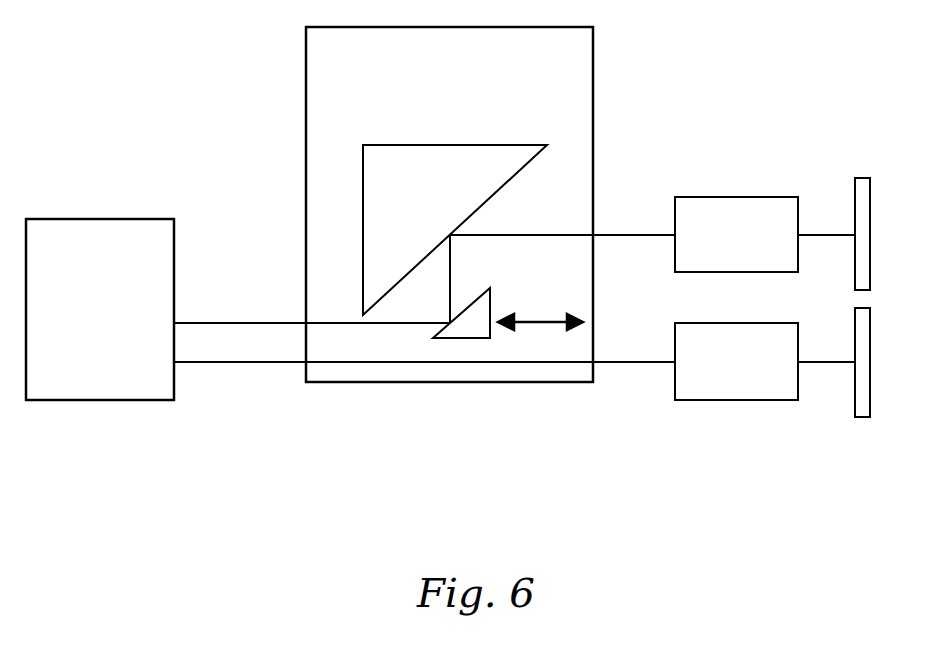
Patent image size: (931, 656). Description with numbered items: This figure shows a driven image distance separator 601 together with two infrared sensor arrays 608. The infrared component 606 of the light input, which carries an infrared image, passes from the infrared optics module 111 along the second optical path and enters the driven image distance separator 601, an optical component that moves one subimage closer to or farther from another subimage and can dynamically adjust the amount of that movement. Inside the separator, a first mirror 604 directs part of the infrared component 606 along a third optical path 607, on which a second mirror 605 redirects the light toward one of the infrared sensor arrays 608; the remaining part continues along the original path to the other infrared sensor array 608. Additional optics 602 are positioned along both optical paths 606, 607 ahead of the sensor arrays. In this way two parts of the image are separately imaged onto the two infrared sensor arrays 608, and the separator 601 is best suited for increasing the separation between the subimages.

The infrared optics module 111 is at (82, 323).
The driven image distance separator 601 is at (430, 131).
The additional optics 602 is at (765, 298).
The first mirror 604 is at (473, 326).
The second mirror 605 is at (383, 187).
The infrared component (second optical path) 606 is at (283, 362).
The third optical path 607 is at (629, 235).
The infrared sensor array 608 is at (858, 212).